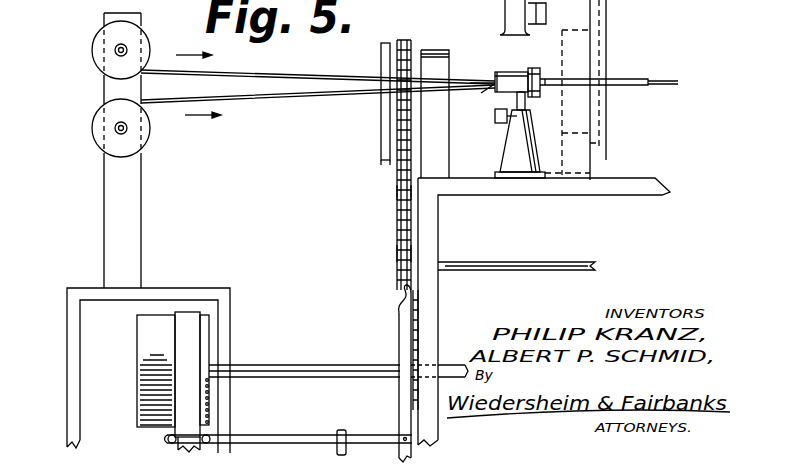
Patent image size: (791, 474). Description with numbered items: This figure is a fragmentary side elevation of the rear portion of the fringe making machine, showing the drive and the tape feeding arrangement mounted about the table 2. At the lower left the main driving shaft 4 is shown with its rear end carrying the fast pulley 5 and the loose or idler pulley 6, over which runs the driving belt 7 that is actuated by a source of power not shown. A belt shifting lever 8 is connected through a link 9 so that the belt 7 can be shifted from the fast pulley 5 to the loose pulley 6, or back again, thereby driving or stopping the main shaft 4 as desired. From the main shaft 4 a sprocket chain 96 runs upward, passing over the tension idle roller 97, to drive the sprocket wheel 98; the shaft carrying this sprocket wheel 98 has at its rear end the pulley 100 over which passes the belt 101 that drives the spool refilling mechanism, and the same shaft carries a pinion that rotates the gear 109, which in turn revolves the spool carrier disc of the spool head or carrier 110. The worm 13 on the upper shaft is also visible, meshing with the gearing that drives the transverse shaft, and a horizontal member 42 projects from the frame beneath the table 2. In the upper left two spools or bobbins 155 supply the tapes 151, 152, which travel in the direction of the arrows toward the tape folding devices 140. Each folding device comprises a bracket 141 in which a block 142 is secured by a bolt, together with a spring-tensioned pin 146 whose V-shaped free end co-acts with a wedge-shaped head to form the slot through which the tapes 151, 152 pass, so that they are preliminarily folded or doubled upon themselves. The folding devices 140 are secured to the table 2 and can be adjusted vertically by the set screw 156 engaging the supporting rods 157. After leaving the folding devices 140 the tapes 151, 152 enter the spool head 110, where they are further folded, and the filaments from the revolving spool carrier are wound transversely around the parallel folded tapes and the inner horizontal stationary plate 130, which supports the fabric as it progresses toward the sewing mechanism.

The table 2 is at (493, 196).
The main driving shaft 4 is at (300, 353).
The fast pulley 5 is at (209, 333).
The loose or idler pulley 6 is at (150, 348).
The driving belt 7 is at (185, 320).
The belt shifting lever 8 is at (403, 334).
The link 9 is at (305, 424).
The worm 13 is at (522, 101).
The shelf 42 is at (497, 265).
The sprocket chain 96 is at (398, 253).
The tension idle roller 97 is at (400, 190).
The sprocket wheel 98 is at (420, 36).
The pulley 100 is at (381, 102).
The belt 101 is at (384, 140).
The gear 109 is at (595, 42).
The spool head or carrier 110 is at (603, 22).
The inner horizontal stationary plate 130 is at (668, 85).
The tape folding devices 140 is at (508, 60).
The bracket 141 is at (575, 78).
The block 142 is at (535, 70).
The pin 146 is at (500, 82).
The tape 151 is at (252, 73).
The tape 152 is at (292, 95).
The spools or bobbins 155 is at (96, 118).
The set screw 156 is at (500, 122).
The supporting rods 157 is at (518, 92).